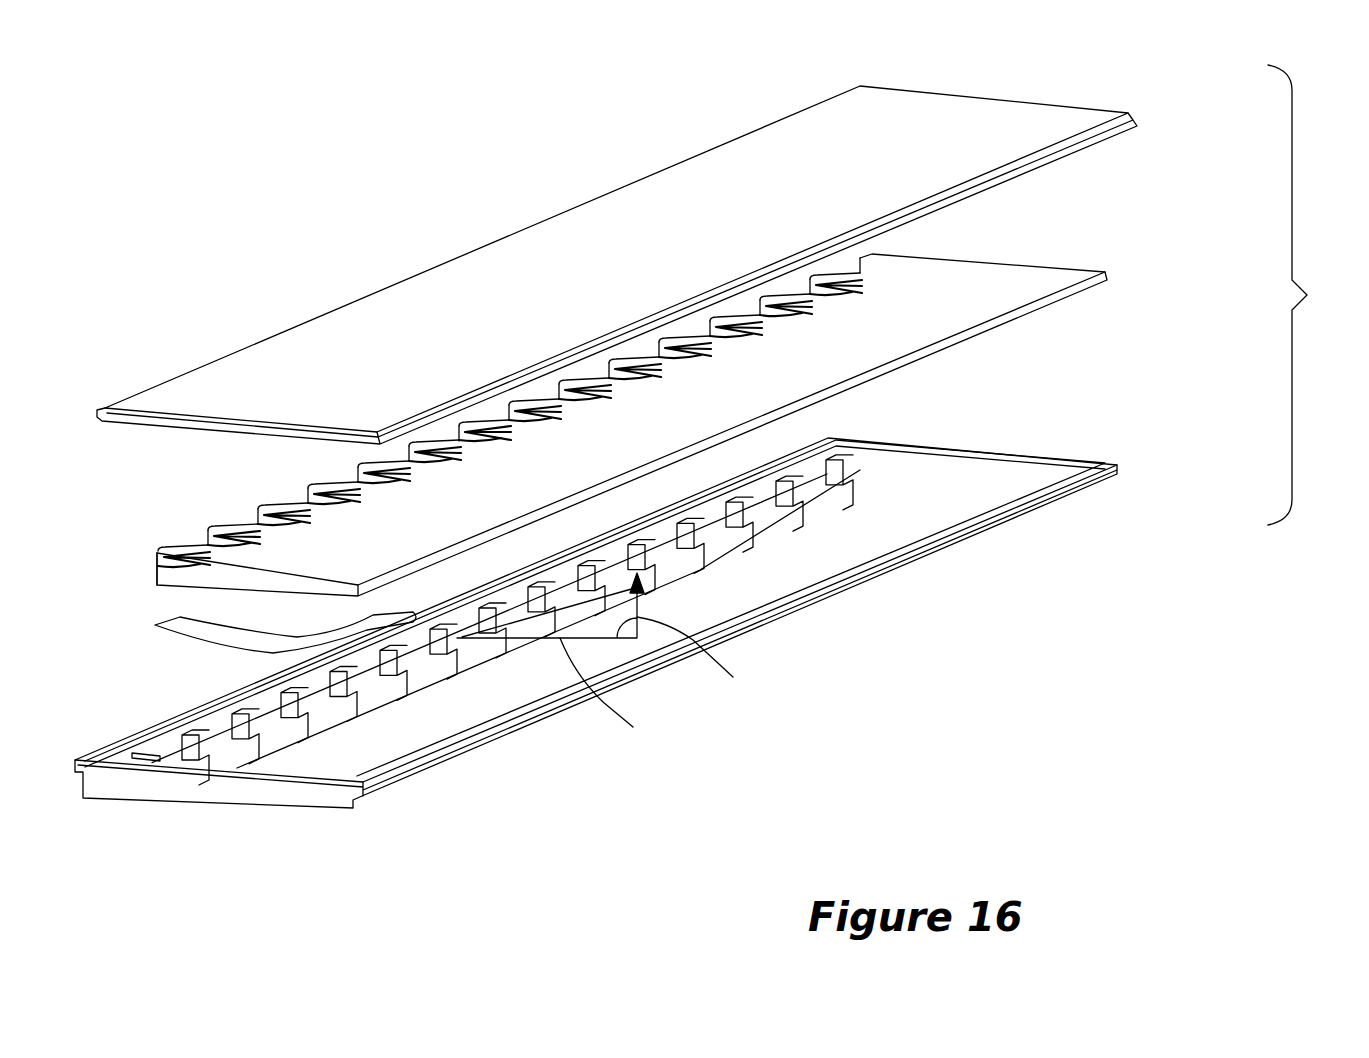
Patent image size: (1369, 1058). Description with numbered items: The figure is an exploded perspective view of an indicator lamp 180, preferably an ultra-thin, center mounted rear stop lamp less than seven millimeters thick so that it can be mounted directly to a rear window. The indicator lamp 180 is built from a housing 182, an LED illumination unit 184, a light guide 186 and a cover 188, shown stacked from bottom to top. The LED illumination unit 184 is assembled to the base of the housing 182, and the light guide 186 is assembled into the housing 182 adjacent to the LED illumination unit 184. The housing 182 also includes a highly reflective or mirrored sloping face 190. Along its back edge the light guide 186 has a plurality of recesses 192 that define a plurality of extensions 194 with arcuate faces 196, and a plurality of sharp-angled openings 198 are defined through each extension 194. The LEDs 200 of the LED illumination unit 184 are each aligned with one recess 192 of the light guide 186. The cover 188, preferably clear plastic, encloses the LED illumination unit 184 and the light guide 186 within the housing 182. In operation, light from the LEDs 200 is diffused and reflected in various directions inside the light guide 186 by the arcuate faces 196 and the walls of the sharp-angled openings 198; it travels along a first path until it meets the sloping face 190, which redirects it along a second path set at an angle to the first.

The indicator lamp 180 is at (1314, 295).
The housing 182 is at (607, 596).
The LED illumination unit 184 is at (163, 743).
The light guide 186 is at (611, 425).
The cover 188 is at (1137, 127).
The sloping face 190 is at (858, 547).
The recesses 192 is at (297, 500).
The extensions 194 is at (168, 547).
The arcuate faces 196 is at (160, 578).
The sharp-angled openings 198 is at (287, 510).
The LEDs 200 is at (840, 453).